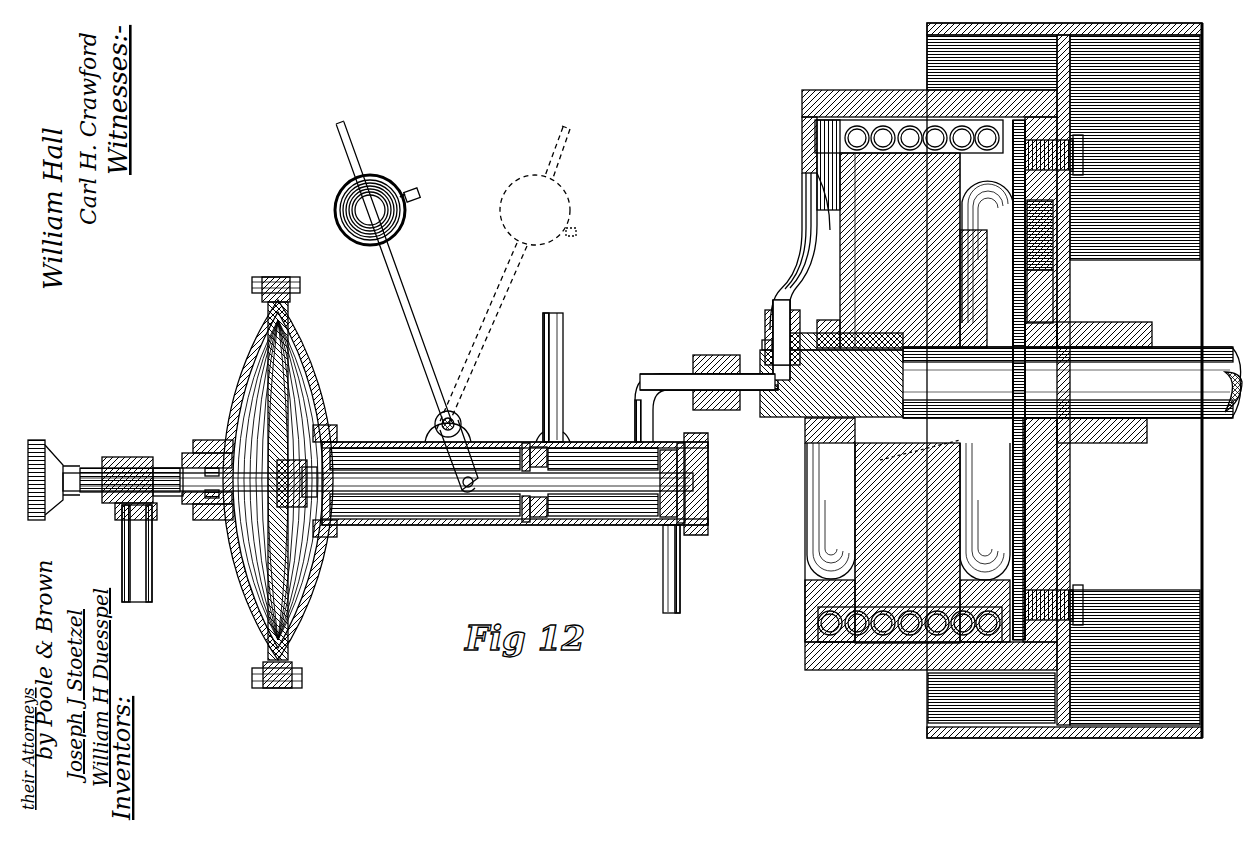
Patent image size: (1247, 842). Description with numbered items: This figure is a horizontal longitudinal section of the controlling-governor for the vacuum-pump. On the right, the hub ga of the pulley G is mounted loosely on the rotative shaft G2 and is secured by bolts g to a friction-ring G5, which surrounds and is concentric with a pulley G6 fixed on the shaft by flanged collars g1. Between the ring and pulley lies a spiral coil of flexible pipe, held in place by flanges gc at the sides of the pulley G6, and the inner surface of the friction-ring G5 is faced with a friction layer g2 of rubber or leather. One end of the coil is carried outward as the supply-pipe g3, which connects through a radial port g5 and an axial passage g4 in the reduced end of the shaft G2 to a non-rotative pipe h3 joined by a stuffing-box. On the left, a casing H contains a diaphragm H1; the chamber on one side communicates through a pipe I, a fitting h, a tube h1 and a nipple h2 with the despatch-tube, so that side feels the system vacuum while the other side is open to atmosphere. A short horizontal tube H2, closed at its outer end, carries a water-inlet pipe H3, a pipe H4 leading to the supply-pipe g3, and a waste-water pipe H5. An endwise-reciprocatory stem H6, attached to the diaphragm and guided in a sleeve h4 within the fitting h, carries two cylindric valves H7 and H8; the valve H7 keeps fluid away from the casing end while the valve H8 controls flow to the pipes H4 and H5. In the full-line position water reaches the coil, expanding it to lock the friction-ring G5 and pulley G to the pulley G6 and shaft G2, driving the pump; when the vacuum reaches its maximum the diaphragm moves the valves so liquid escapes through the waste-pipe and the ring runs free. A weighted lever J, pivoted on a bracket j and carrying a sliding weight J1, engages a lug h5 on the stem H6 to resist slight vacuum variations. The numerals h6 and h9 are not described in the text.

The fitting h is at (124, 457).
The tube h1 is at (180, 456).
The nipple h2 is at (184, 440).
The non-rotative pipe h3 is at (690, 373).
The sleeve h4 is at (92, 468).
The lug h5 is at (472, 490).
The sleeve h6 is at (176, 494).
The packing h9 is at (210, 516).
The pipe I is at (152, 553).
The casing H is at (318, 367).
The diaphragm H1 is at (295, 378).
The horizontal tube H2 is at (392, 441).
The water-inlet pipe H3 is at (565, 350).
The pipe H4 is at (633, 416).
The waste-water pipe H5 is at (684, 576).
The endwise-reciprocatory stem H6 is at (366, 482).
The cylindric valve H7 is at (535, 525).
The cylindric valve H8 is at (650, 526).
The lever J is at (412, 308).
The sliding weight J1 is at (420, 196).
The bracket j is at (466, 440).
The pulley G is at (1190, 236).
The rotative shaft G2 is at (1212, 347).
The friction-ring G5 is at (930, 152).
The pulley G6 is at (880, 483).
The bolt g is at (1085, 155).
The flanged collar g1 is at (980, 425).
The friction layer g2 is at (878, 100).
The supply-pipe g3 is at (812, 214).
The axial passage g4 is at (757, 395).
The radial port g5 is at (768, 345).
The hub ga is at (1110, 322).
The flanges gc is at (815, 126).